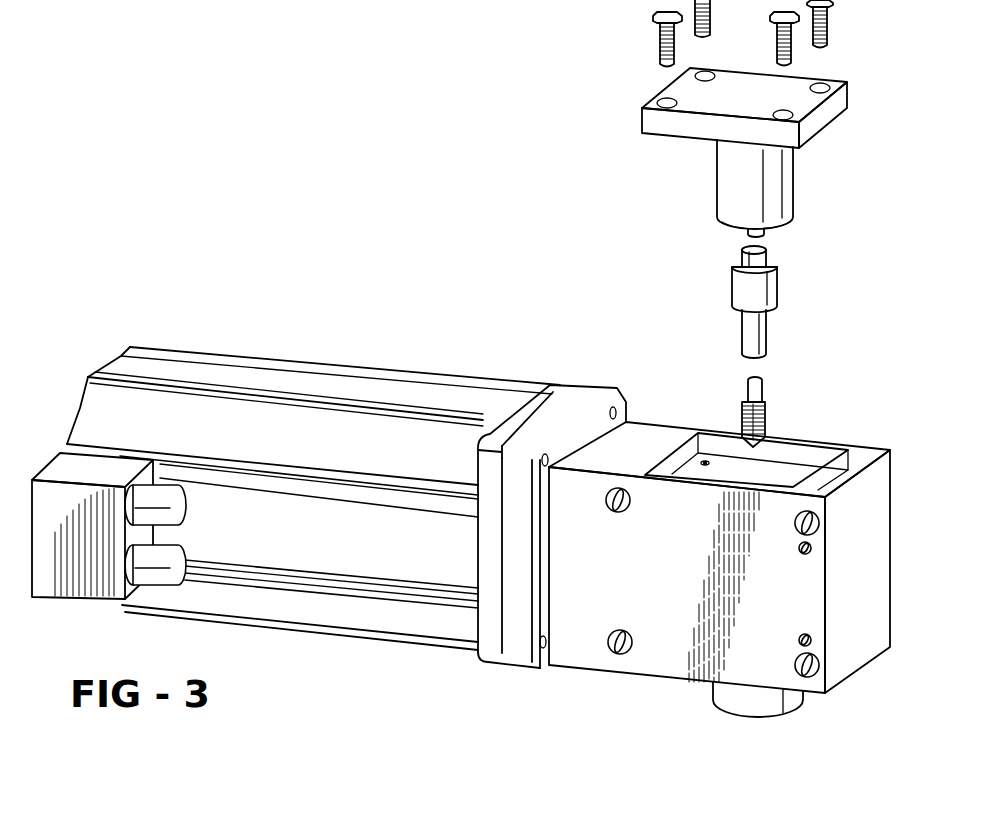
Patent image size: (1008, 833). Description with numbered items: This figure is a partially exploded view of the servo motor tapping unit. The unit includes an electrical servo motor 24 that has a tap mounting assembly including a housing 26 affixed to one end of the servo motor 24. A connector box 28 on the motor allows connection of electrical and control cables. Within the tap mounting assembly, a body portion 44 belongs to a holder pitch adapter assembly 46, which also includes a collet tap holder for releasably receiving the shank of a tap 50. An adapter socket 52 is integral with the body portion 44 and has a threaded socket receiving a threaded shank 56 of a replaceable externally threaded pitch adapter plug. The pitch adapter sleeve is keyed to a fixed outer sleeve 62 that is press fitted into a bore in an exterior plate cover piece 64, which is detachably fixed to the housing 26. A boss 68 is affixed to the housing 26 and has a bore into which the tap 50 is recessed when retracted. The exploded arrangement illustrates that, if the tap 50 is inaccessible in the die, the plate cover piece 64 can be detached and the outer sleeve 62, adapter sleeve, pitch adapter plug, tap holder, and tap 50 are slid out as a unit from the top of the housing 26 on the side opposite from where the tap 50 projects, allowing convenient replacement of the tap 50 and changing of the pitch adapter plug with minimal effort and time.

The electrical servo motor 24 is at (315, 385).
The connector box 28 is at (66, 470).
The housing 26 is at (650, 428).
The exterior plate cover piece 64 is at (683, 90).
The fixed outer sleeve 62 is at (730, 178).
The threaded shank 56 is at (736, 222).
The adapter socket 52 is at (746, 233).
The body portion 44 is at (740, 290).
The holder pitch adapter assembly 46 is at (724, 328).
The tap 50 is at (761, 389).
The boss 68 is at (748, 702).